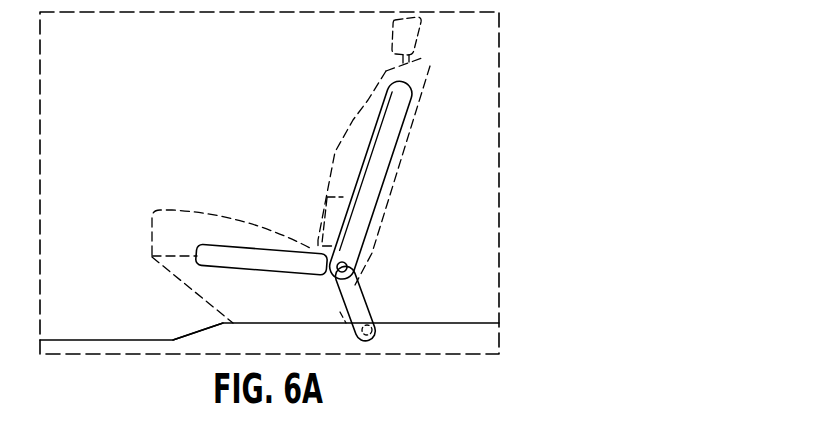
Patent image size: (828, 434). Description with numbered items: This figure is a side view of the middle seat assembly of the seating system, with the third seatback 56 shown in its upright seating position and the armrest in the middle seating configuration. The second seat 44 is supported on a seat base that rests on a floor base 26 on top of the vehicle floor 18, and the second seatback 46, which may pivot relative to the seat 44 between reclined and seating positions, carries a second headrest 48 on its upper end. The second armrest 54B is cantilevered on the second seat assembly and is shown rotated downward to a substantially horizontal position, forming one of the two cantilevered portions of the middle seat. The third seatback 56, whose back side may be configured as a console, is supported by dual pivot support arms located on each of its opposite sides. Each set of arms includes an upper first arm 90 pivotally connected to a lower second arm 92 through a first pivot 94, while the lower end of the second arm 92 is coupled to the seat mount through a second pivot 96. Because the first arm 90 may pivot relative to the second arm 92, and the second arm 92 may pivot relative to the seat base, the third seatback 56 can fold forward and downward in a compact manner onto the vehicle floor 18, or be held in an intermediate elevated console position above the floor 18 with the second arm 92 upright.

The vehicle floor 18 is at (85, 340).
The floor base 26 is at (215, 322).
The second seat 44 is at (167, 207).
The second seatback 46 is at (333, 143).
The second headrest 48 is at (428, 24).
The second armrest 54B is at (197, 247).
The third seatback 56 is at (381, 117).
The first arm 90 is at (373, 190).
The second arm 92 is at (358, 306).
The first pivot 94 is at (347, 267).
The second pivot 96 is at (374, 335).